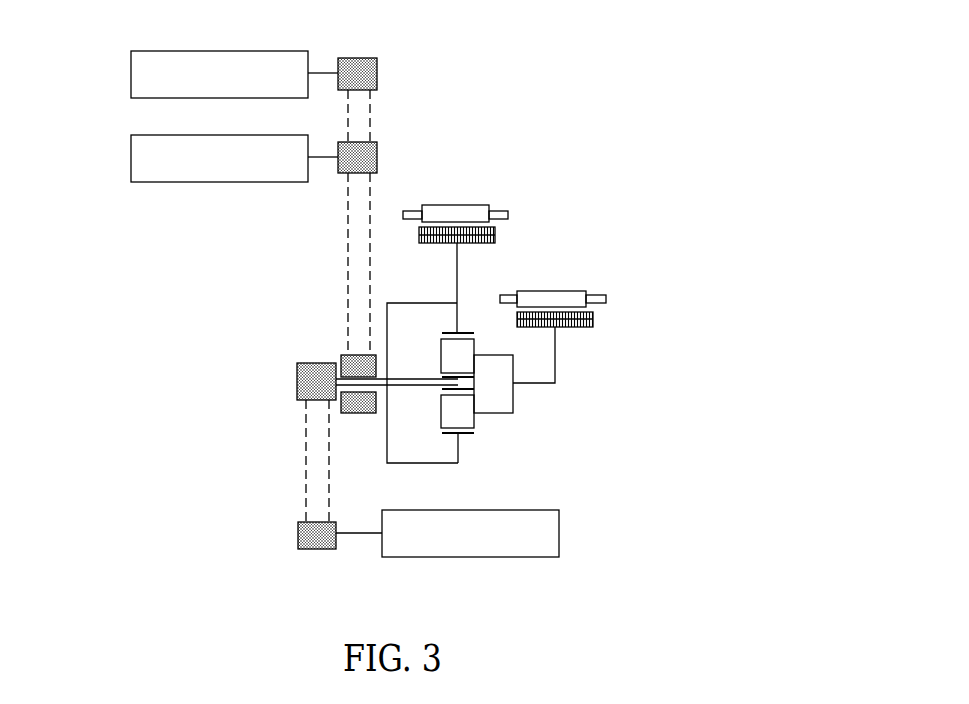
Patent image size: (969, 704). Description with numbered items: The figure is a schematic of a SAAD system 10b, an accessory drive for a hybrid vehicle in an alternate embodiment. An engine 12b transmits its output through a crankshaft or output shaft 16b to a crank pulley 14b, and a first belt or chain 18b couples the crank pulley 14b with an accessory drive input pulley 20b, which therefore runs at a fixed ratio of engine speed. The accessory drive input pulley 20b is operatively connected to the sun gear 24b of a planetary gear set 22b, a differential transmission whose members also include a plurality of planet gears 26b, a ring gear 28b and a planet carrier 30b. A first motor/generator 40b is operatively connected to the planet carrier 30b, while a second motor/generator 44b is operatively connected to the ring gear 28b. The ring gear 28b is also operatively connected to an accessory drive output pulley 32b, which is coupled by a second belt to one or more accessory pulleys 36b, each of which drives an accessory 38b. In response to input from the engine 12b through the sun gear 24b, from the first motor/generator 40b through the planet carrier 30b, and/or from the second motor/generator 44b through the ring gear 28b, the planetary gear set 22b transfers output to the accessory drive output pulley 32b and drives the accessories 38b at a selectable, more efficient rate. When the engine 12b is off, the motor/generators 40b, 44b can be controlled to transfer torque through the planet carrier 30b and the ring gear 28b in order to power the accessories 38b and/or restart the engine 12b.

The SAAD system 10b is at (623, 92).
The engine 12b is at (540, 558).
The crank pulley 14b is at (302, 550).
The output shaft 16b is at (352, 534).
The first belt or chain 18b is at (304, 478).
The accessory drive input pulley 20b is at (316, 363).
The planetary gear set 22b is at (508, 435).
The sun gear 24b is at (439, 373).
The planet gears 26b is at (466, 353).
The ring gear 28b is at (468, 330).
The planet carrier 30b is at (513, 389).
The accessory drive output pulley 32b is at (360, 414).
The accessory pulleys 36b is at (377, 60).
The accessories 38b is at (133, 51).
The first motor/generator 40b is at (578, 287).
The second motor/generator 44b is at (481, 198).